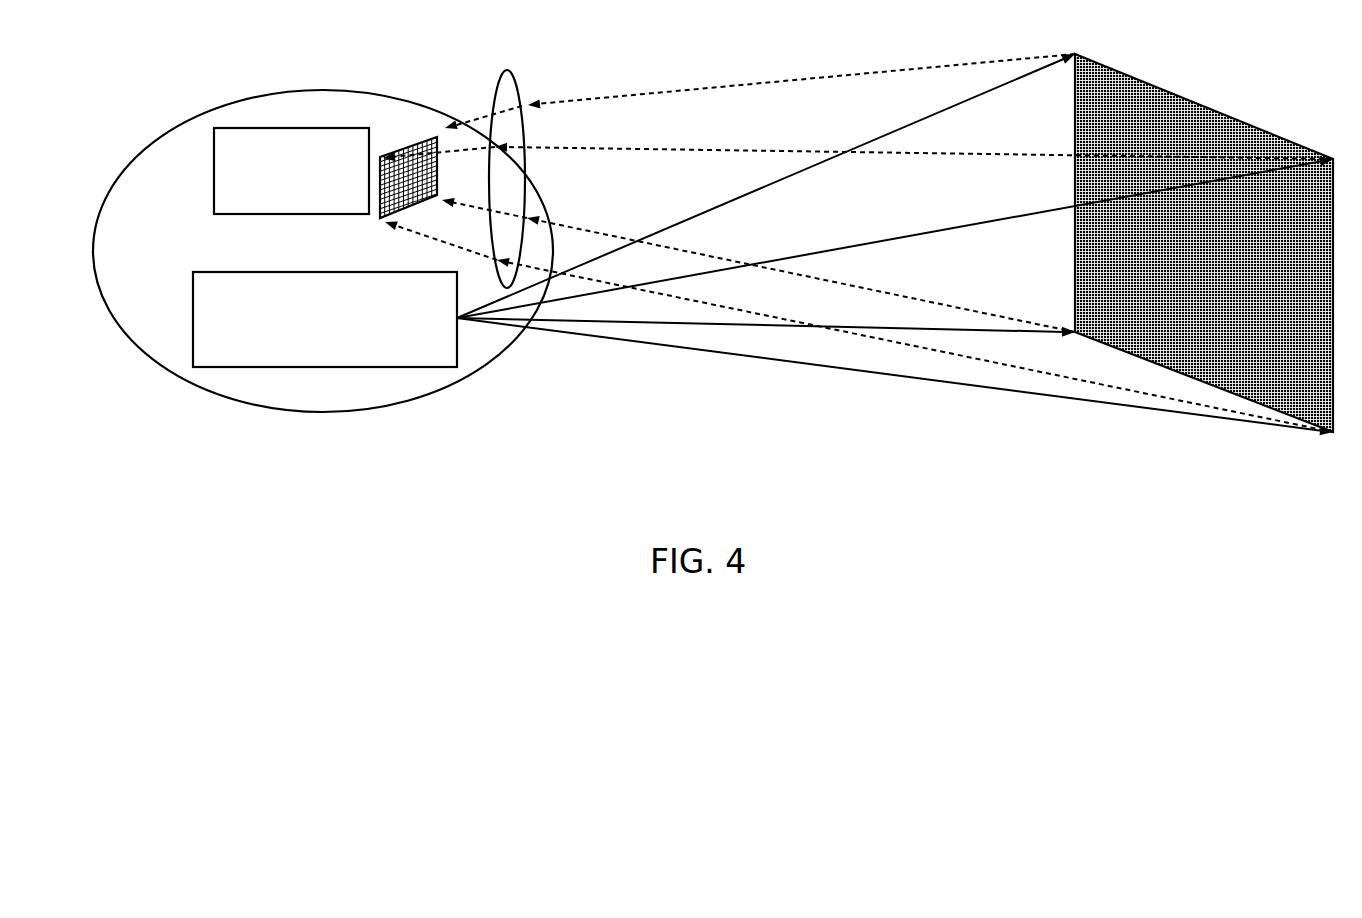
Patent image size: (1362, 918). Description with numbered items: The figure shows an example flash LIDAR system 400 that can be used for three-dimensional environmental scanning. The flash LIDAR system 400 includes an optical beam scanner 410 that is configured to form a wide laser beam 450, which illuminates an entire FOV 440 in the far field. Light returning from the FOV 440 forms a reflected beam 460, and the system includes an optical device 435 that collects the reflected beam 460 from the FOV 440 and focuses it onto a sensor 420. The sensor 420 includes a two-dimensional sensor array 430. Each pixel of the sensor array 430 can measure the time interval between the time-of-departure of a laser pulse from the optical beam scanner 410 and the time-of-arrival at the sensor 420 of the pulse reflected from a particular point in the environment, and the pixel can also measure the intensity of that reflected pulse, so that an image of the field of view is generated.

The flash LIDAR system 400 is at (322, 92).
The optical beam scanner 410 is at (304, 361).
The sensor 420 is at (270, 197).
The 2-D sensor array 430 is at (421, 140).
The optical device 435 is at (507, 70).
The FOV 440 is at (1228, 112).
The wide laser beam 450 is at (907, 232).
The reflected beam 460 is at (848, 73).